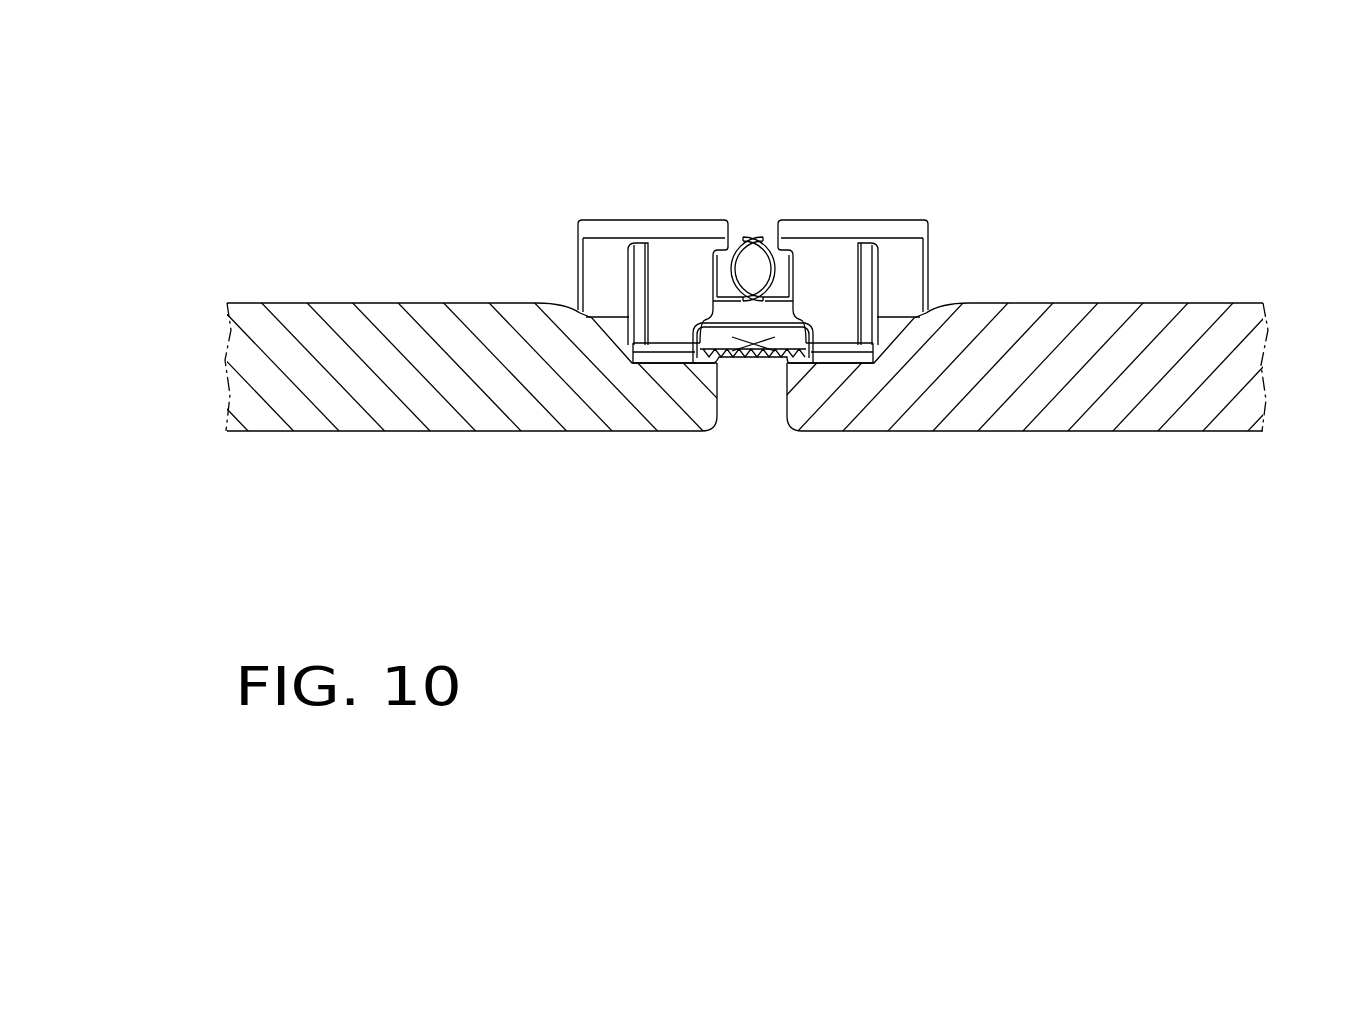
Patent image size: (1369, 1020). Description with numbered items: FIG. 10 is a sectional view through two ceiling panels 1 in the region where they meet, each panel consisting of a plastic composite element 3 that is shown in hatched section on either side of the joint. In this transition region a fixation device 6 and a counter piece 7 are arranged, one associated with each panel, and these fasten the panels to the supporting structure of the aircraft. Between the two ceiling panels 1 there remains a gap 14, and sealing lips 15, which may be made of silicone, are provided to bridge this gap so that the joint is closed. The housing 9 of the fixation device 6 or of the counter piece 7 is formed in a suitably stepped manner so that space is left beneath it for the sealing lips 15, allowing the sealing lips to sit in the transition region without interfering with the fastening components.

The ceiling panel 1 is at (334, 241).
The plastic composite element 3 is at (378, 378).
The fixation device 6 is at (842, 220).
The counter piece 7 is at (653, 220).
The housing 9 is at (602, 260).
The gap 14 is at (748, 388).
The sealing lip 15 is at (737, 355).